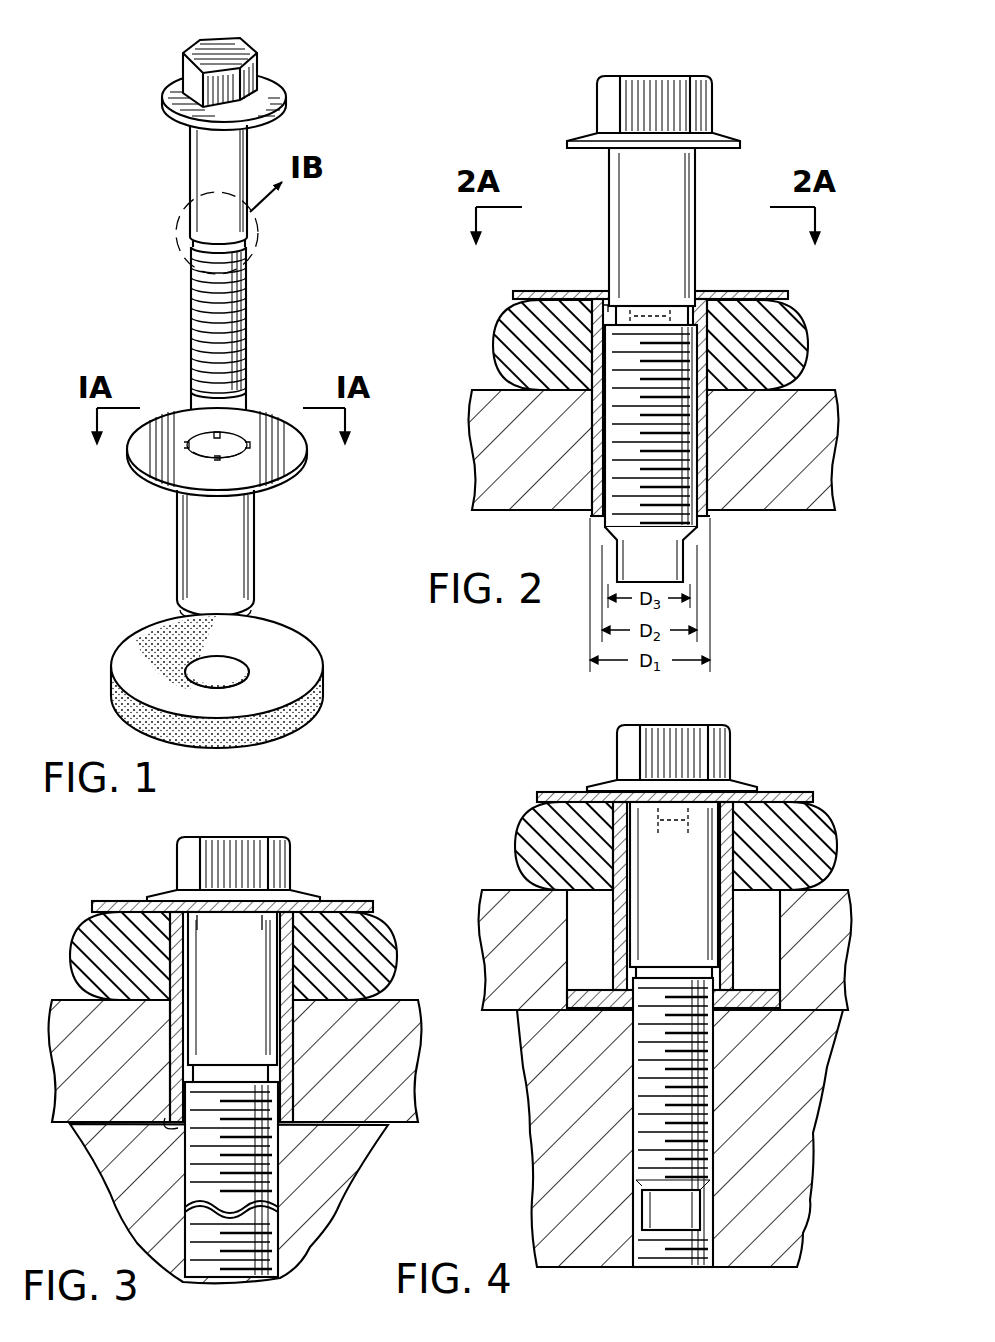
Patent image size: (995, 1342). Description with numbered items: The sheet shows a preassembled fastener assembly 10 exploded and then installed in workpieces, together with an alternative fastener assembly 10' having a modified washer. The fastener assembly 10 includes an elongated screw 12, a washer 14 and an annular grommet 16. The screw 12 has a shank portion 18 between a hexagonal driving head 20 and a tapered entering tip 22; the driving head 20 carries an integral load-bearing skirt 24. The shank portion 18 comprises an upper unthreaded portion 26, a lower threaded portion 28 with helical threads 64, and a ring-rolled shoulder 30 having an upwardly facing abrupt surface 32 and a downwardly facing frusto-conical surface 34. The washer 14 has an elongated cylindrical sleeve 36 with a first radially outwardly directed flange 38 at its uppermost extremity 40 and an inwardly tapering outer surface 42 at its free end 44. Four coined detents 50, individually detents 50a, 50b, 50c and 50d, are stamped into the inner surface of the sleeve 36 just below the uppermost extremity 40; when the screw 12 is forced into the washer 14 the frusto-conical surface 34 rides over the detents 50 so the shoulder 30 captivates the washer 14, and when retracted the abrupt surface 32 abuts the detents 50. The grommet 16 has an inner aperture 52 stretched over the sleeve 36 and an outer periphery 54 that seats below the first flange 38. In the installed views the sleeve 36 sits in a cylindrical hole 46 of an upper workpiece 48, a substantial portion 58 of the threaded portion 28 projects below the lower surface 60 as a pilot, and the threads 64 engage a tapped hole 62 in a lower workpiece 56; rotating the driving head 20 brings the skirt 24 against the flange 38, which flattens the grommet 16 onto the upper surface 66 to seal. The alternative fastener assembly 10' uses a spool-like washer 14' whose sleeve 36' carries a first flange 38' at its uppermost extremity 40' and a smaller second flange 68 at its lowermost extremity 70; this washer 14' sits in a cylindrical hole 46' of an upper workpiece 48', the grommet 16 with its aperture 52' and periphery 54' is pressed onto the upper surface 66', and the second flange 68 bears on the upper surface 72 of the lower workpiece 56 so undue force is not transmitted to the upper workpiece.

In FIG. 1, the fastener assembly 10 is at (90, 50).
In FIG. 2, the fastener assembly 10 is at (785, 30).
In FIG. 3, the fastener assembly 10 is at (95, 847).
In FIG. 4, the fastener assembly 10' is at (819, 740).
In FIG. 1, the elongated screw 12 is at (188, 178).
In FIG. 2, the elongated screw 12 is at (666, 74).
In FIG. 3, the elongated screw 12 is at (282, 824).
In FIG. 4, the elongated screw 12 is at (716, 716).
In FIG. 1, the washer 14 is at (247, 513).
In FIG. 2, the washer 14 is at (650, 373).
In FIG. 3, the washer 14 is at (245, 983).
In FIG. 4, the spool-like washer 14' is at (665, 868).
In FIG. 1, the annular grommet 16 is at (130, 634).
In FIG. 2, the annular grommet 16 is at (815, 330).
In FIG. 3, the annular grommet 16 is at (395, 924).
In FIG. 4, the annular grommet 16 is at (836, 818).
In FIG. 1, the shank portion 18 is at (250, 156).
In FIG. 2, the shank portion 18 is at (702, 190).
In FIG. 3, the shank portion 18 is at (284, 961).
In FIG. 4, the shank portion 18 is at (726, 858).
In FIG. 1, the hexagonal driving head 20 is at (234, 42).
In FIG. 2, the hexagonal driving head 20 is at (615, 78).
In FIG. 3, the hexagonal driving head 20 is at (226, 836).
In FIG. 4, the hexagonal driving head 20 is at (656, 724).
In FIG. 1, the tapered entering tip 22 is at (245, 396).
In FIG. 2, the tapered entering tip 22 is at (651, 554).
In FIG. 4, the tapered entering tip 22 is at (673, 1205).
In FIG. 1, the load-bearing skirt 24 is at (282, 90).
In FIG. 2, the load-bearing skirt 24 is at (576, 137).
In FIG. 3, the load-bearing skirt 24 is at (157, 890).
In FIG. 4, the load-bearing skirt 24 is at (597, 780).
In FIG. 1, the upper unthreaded portion 26 is at (206, 155).
In FIG. 2, the upper unthreaded portion 26 is at (625, 211).
In FIG. 3, the upper unthreaded portion 26 is at (232, 988).
In FIG. 4, the upper unthreaded portion 26 is at (674, 884).
In FIG. 1, the lower threaded portion 28 is at (192, 308).
In FIG. 2, the lower threaded portion 28 is at (600, 410).
In FIG. 3, the lower threaded portion 28 is at (186, 1152).
In FIG. 4, the lower threaded portion 28 is at (632, 1066).
In FIG. 1, the shoulder 30 is at (252, 236).
In FIG. 2, the shoulder 30 is at (630, 312).
In FIG. 3, the shoulder 30 is at (292, 1072).
In FIG. 4, the shoulder 30 is at (724, 972).
In FIG. 2, the upwardly facing abrupt surface 32 is at (682, 304).
In FIG. 3, the upwardly facing abrupt surface 32 is at (212, 1080).
In FIG. 4, the upwardly facing abrupt surface 32 is at (660, 970).
In FIG. 3, the downwardly facing frusto-conical surface 34 is at (180, 1126).
In FIG. 4, the downwardly facing frusto-conical surface 34 is at (620, 1010).
In FIG. 1, the cylindrical sleeve 36 is at (246, 553).
In FIG. 2, the cylindrical sleeve 36 is at (678, 407).
In FIG. 3, the cylindrical sleeve 36 is at (261, 1017).
In FIG. 4, the sleeve 36' is at (658, 896).
In FIG. 1, the first radially outwardly directed flange 38 is at (213, 457).
In FIG. 2, the first radially outwardly directed flange 38 is at (649, 271).
In FIG. 3, the first radially outwardly directed flange 38 is at (213, 888).
In FIG. 4, the first radially outwardly directed flange 38' is at (691, 775).
In FIG. 1, the uppermost extremity 40 is at (195, 416).
In FIG. 2, the uppermost extremity 40 is at (629, 275).
In FIG. 3, the uppermost extremity 40 is at (312, 862).
In FIG. 4, the uppermost extremity 40' is at (751, 760).
In FIG. 1, the inwardly tapering outer surface 42 is at (250, 614).
In FIG. 2, the inwardly tapering outer surface 42 is at (702, 512).
In FIG. 3, the inwardly tapering outer surface 42 is at (290, 1122).
In FIG. 1, the free end 44 is at (186, 626).
In FIG. 2, the free end 44 is at (598, 514).
In FIG. 3, the free end 44 is at (160, 1120).
In FIG. 2, the cylindrical hole 46 is at (562, 478).
In FIG. 3, the cylindrical hole 46 is at (144, 1044).
In FIG. 4, the cylindrical hole 46' is at (555, 969).
In FIG. 2, the upper workpiece 48 is at (634, 450).
In FIG. 3, the upper workpiece 48 is at (244, 1072).
In FIG. 4, the upper workpiece 48' is at (675, 967).
In FIG. 2, the coined detents 50 is at (700, 316).
In FIG. 3, the coined detents 50 is at (260, 926).
In FIG. 4, the coined detents 50 is at (694, 812).
In FIG. 1, the coined detent 50a is at (250, 445).
In FIG. 1, the coined detent 50b is at (212, 432).
In FIG. 1, the coined detent 50c is at (186, 446).
In FIG. 1, the coined detent 50d is at (218, 462).
In FIG. 1, the inner aperture 52 is at (271, 652).
In FIG. 2, the inner aperture 52 is at (749, 407).
In FIG. 3, the inner aperture 52 is at (139, 964).
In FIG. 4, the grommet bore (alternate embodiment) 52' is at (589, 857).
In FIG. 1, the outer periphery 54 is at (106, 725).
In FIG. 2, the outer periphery 54 is at (836, 358).
In FIG. 3, the outer periphery 54 is at (420, 947).
In FIG. 4, the grommet outer surface (alternate embodiment) 54' is at (485, 846).
In FIG. 3, the lower workpiece 56 is at (104, 1216).
In FIG. 4, the lower workpiece 56 is at (600, 1188).
In FIG. 2, the substantial portion 58 is at (700, 527).
In FIG. 2, the lower surface 60 is at (805, 515).
In FIG. 3, the lower surface 60 is at (385, 1126).
In FIG. 3, the tapped hole 62 is at (280, 1272).
In FIG. 4, the tapped hole 62 is at (706, 1252).
In FIG. 1, the helical threads 64 is at (243, 347).
In FIG. 2, the helical threads 64 is at (690, 455).
In FIG. 3, the helical threads 64 is at (210, 1182).
In FIG. 4, the helical threads 64 is at (646, 1116).
In FIG. 2, the upper surface 66 is at (480, 366).
In FIG. 3, the upper surface 66 is at (50, 973).
In FIG. 4, the upper surface 66' is at (481, 882).
In FIG. 4, the second radially outwardly directed flange 68 is at (778, 976).
In FIG. 4, the lowermost extremity 70 is at (730, 1010).
In FIG. 4, the upper surface 72 is at (552, 1010).